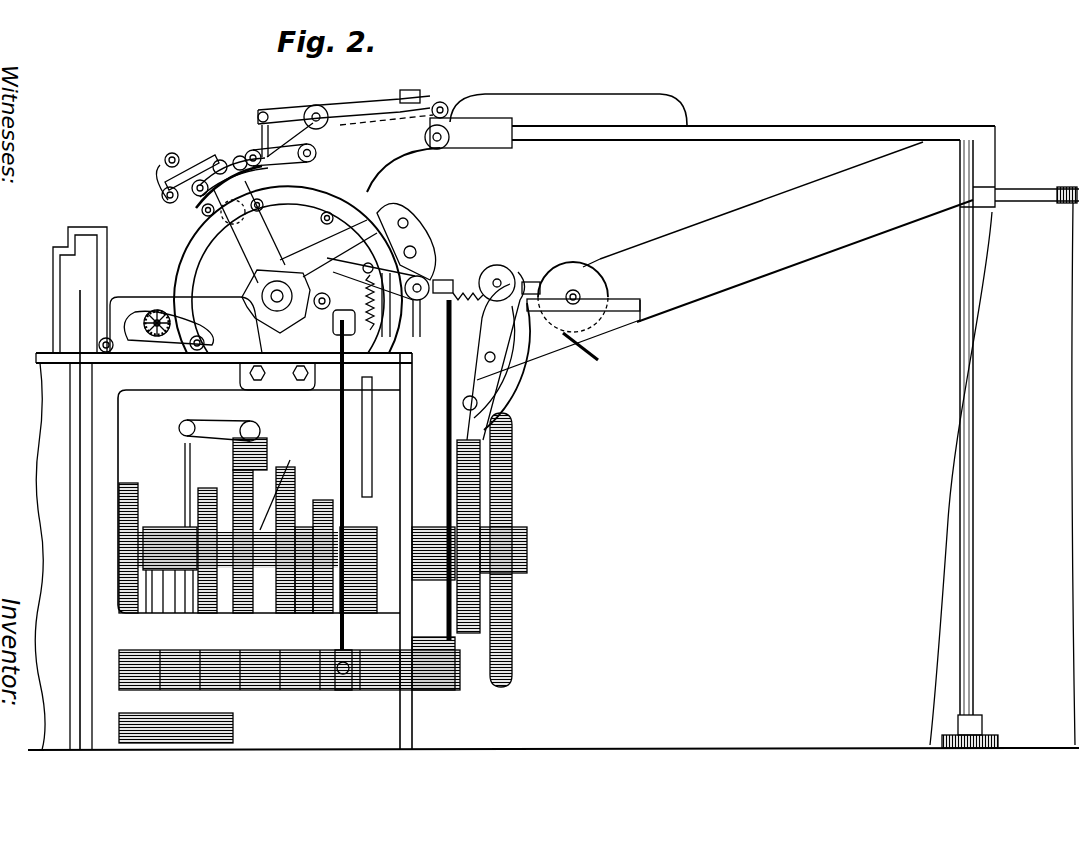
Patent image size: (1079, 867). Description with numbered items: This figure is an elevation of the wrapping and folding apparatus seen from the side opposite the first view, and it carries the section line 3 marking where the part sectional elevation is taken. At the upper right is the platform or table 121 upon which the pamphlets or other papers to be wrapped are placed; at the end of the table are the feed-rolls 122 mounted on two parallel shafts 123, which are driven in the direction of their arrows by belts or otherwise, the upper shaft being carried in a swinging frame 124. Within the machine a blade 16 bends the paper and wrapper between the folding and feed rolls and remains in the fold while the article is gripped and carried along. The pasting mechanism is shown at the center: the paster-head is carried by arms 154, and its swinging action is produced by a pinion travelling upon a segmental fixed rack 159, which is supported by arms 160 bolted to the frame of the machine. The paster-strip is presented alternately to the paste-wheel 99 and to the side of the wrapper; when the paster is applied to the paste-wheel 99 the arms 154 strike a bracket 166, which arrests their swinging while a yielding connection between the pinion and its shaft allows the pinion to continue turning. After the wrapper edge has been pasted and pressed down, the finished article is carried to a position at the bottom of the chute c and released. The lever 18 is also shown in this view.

The lever 18 is at (165, 178).
The blade 16 is at (197, 213).
The swinging frame 124 is at (362, 106).
The feed-rolls 122 is at (438, 104).
The parallel shafts 123 is at (441, 128).
The platform or table 121 is at (759, 137).
The chute c is at (786, 232).
The roller / paste-wheel 99 is at (584, 266).
The arms 154 is at (540, 282).
The bracket 166 is at (516, 268).
The segmental fixed rack 159 is at (466, 283).
The arms 160 is at (500, 338).
The section line 3 3 is at (483, 300).